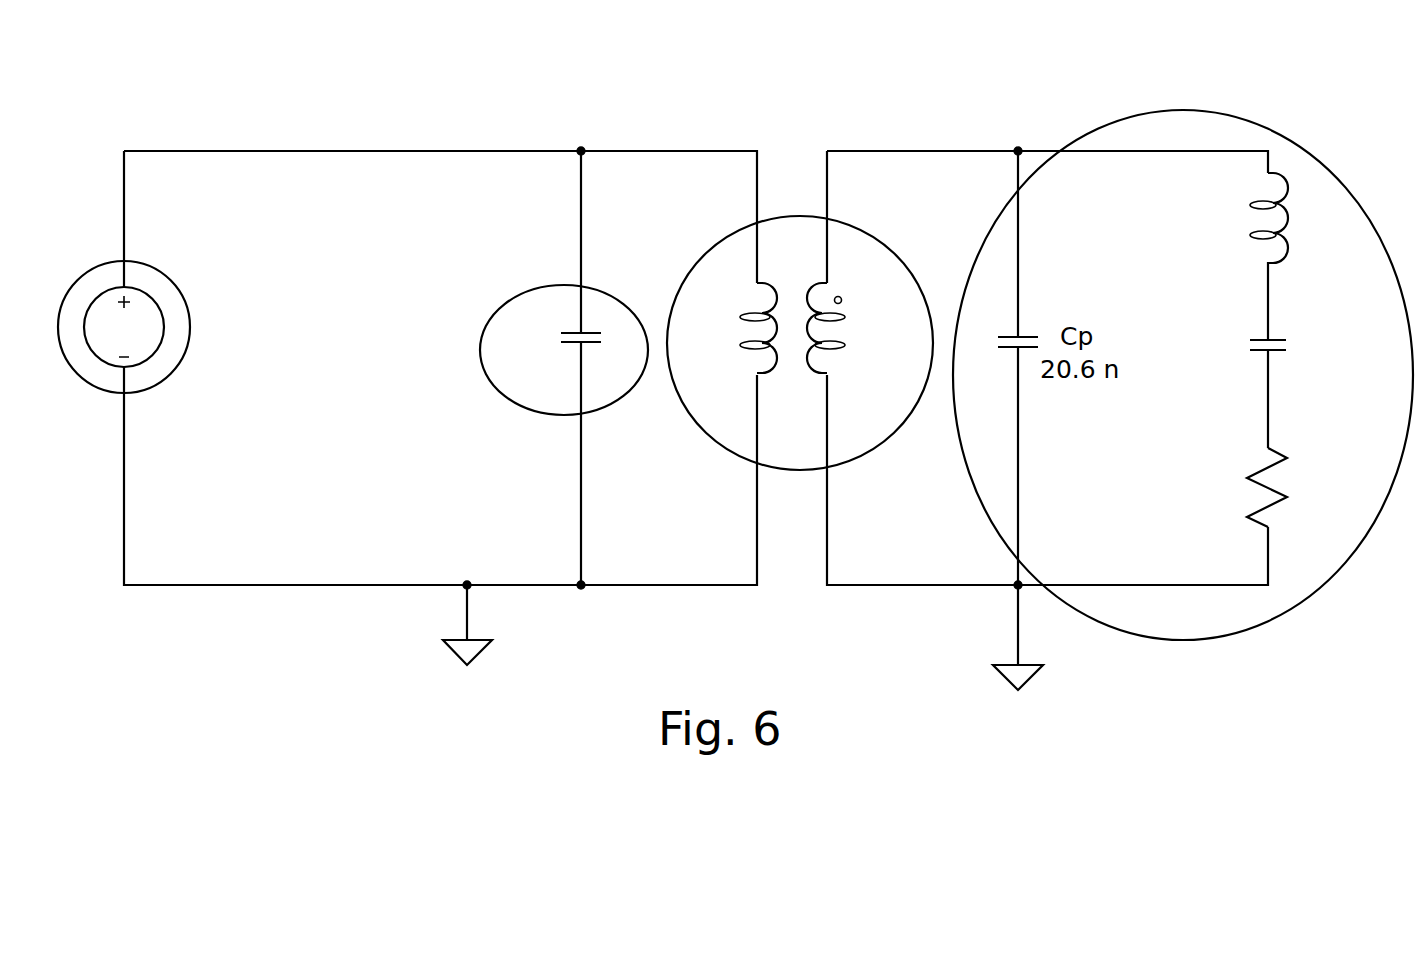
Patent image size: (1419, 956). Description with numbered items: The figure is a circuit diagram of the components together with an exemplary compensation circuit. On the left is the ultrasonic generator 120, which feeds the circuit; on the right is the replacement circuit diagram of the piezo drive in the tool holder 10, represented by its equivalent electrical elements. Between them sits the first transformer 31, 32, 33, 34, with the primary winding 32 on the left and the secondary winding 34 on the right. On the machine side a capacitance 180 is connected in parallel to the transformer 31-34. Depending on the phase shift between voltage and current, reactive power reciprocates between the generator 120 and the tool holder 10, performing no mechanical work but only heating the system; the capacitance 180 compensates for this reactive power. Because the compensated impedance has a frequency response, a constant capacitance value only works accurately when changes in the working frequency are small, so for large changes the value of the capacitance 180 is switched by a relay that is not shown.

The tool holder 10 is at (1196, 112).
The ultrasonic generator 120 is at (118, 262).
The capacitance 180 is at (559, 285).
The first transformer 31 is at (809, 295).
The primary winding 32 is at (809, 295).
The first transformer 33 is at (809, 295).
The secondary winding 34 is at (870, 237).